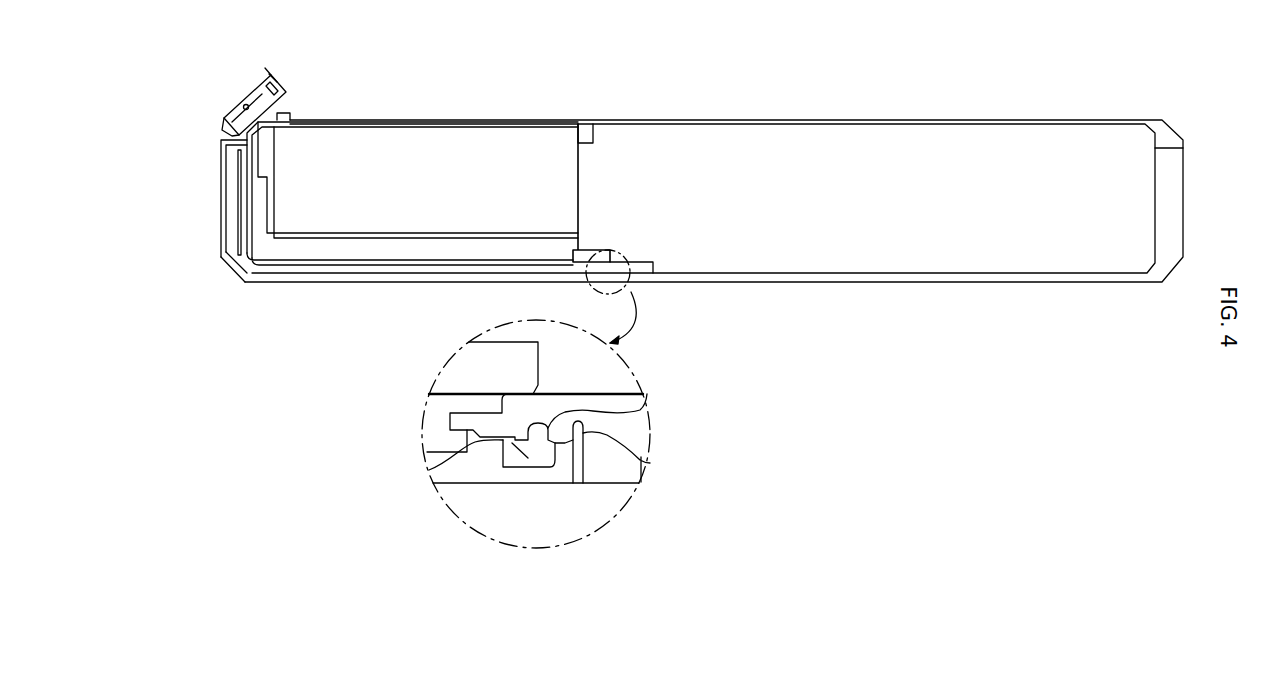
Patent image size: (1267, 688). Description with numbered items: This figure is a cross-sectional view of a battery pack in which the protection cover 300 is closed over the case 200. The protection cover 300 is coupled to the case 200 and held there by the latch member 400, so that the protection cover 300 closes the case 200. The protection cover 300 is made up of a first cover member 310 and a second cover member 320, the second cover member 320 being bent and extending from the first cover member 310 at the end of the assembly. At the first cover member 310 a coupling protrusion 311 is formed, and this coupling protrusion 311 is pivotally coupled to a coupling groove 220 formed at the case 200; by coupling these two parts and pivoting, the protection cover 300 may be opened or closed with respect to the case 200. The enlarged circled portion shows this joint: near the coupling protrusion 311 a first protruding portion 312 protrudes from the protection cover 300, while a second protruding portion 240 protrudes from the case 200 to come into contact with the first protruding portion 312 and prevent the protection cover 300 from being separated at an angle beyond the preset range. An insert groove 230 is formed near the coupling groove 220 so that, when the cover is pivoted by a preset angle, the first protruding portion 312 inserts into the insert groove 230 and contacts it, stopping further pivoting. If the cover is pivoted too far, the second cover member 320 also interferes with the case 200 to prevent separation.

The case 200 is at (850, 283).
The coupling groove 220 is at (643, 394).
The insert groove 230 is at (637, 441).
The second protruding portion 240 is at (582, 485).
The protection cover 300 is at (399, 344).
The first cover member 310 is at (394, 283).
The coupling protrusion 311 is at (432, 464).
The first protruding portion 312 is at (563, 472).
The second cover member 320 is at (221, 220).
The latch member 400 is at (243, 101).